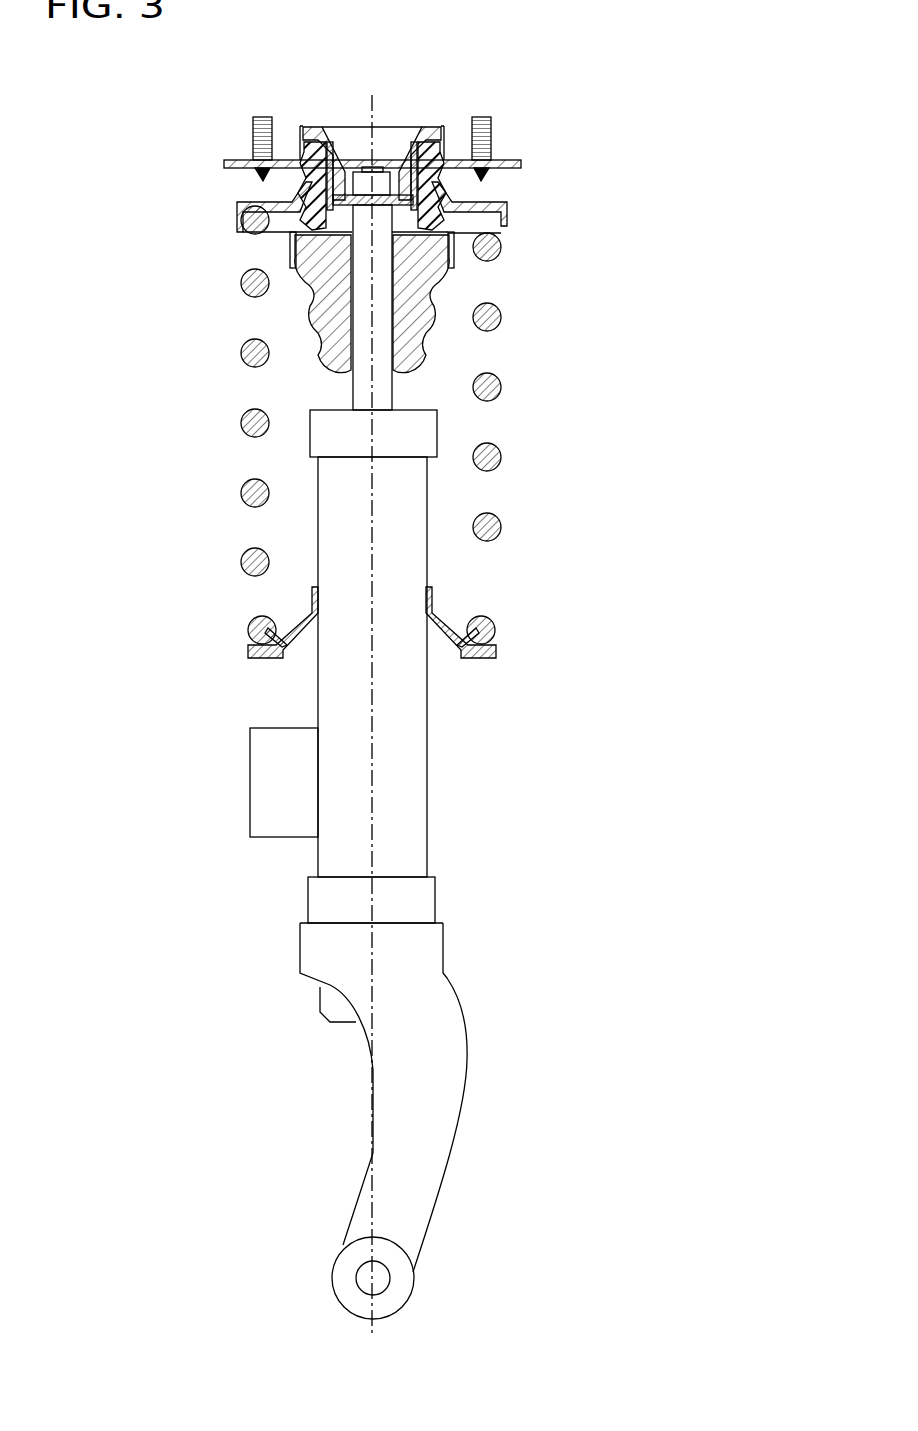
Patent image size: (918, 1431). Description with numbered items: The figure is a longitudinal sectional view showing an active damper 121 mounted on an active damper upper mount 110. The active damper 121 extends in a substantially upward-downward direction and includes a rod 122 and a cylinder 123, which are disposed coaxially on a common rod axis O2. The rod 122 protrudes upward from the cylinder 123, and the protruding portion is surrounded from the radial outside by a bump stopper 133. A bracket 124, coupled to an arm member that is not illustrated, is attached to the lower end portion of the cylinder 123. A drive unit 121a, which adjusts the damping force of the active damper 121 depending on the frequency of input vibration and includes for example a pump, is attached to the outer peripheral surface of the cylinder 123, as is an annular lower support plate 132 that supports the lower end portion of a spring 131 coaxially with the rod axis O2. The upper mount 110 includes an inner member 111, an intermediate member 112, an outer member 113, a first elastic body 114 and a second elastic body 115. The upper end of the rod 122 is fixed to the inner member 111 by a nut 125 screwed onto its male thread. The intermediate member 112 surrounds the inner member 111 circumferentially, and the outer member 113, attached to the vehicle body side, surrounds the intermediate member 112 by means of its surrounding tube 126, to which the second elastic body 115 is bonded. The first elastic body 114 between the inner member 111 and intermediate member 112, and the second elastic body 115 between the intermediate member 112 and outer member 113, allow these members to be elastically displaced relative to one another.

The rod axis O2 is at (370, 97).
The active damper upper mount 110 is at (445, 126).
The inner member 111 is at (342, 197).
The intermediate member 112 is at (512, 197).
The outer member 113 is at (514, 160).
The first elastic body 114 is at (337, 210).
The second elastic body 115 is at (298, 180).
The active damper 121 is at (340, 666).
The drive unit 121a is at (250, 783).
The rod 122 is at (393, 390).
The cylinder 123 is at (428, 772).
The bracket 124 is at (465, 1057).
The nut 125 is at (387, 173).
The surrounding tube 126 is at (310, 145).
The spring 131 is at (503, 456).
The lower support plate 132 is at (478, 657).
The bump stopper 133 is at (434, 303).